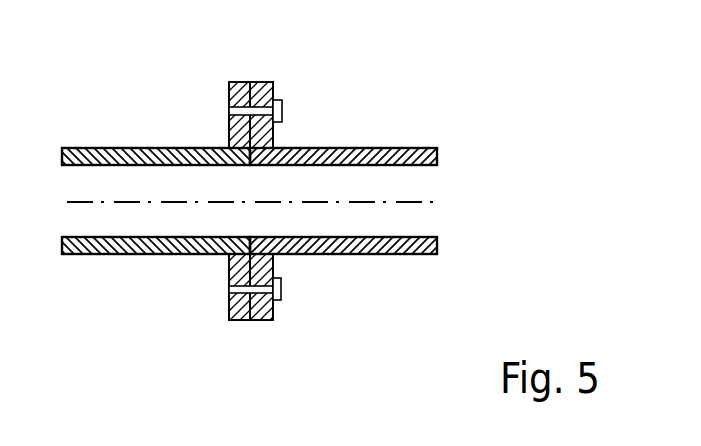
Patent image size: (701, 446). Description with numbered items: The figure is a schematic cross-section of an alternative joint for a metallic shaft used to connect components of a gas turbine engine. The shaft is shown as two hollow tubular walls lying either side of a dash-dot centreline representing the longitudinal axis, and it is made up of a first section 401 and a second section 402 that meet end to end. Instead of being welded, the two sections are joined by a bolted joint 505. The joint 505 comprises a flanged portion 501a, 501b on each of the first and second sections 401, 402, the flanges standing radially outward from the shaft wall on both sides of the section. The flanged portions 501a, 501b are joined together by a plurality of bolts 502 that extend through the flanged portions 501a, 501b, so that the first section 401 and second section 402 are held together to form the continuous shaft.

The first section 401 is at (112, 147).
The second section 402 is at (403, 147).
The joint 505 is at (226, 75).
The bolts 502 is at (265, 109).
The flanged portion 501a is at (231, 314).
The flanged portion 501b is at (274, 318).